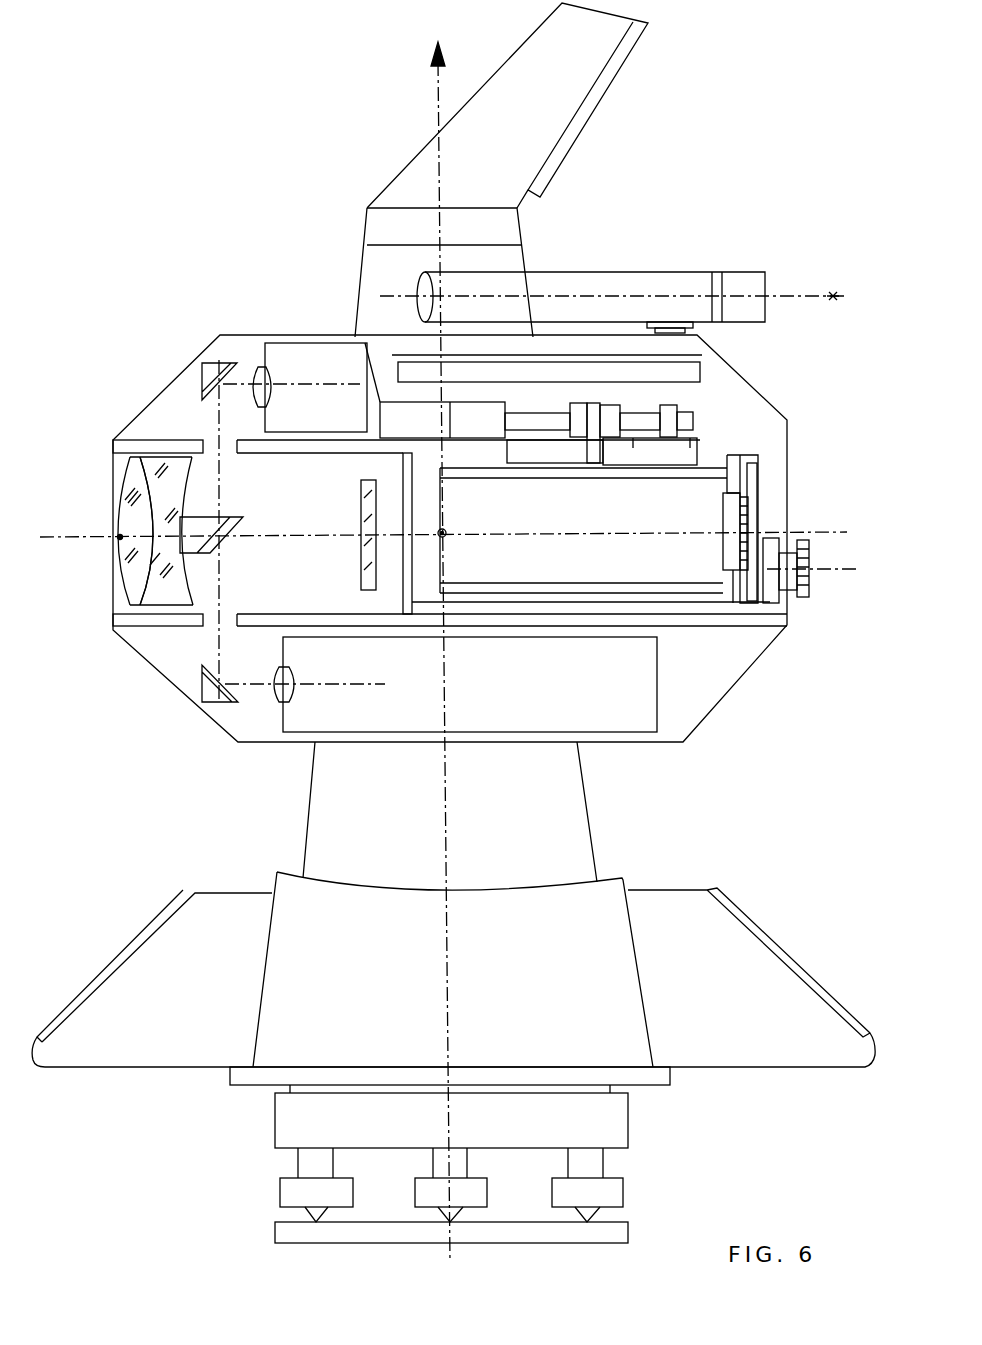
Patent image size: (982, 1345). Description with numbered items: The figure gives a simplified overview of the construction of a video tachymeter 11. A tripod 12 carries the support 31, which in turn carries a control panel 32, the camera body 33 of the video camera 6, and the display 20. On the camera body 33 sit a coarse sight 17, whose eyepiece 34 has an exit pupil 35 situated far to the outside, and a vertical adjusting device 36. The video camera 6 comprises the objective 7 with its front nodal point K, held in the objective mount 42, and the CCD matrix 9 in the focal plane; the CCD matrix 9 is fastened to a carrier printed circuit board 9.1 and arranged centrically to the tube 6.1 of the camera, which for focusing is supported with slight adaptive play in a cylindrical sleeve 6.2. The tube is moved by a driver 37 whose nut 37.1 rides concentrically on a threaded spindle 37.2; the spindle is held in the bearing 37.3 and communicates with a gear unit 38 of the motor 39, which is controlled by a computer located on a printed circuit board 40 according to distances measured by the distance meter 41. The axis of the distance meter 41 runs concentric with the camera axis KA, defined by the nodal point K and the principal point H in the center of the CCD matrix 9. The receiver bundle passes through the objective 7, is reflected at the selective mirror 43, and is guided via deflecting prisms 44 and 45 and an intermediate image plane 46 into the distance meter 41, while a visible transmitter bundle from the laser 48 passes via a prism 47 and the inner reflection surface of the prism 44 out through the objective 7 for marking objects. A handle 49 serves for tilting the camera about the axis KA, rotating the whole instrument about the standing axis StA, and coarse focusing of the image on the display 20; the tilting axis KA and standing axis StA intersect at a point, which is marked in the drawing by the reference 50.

The video camera 6 is at (305, 503).
The tube 6.1 is at (690, 480).
The cylindrical sleeve 6.2 is at (543, 463).
The objective 7 is at (203, 520).
The CCD matrix 9 is at (738, 572).
The carrier printed circuit board 9.1 is at (756, 475).
The video tachymeter 11 is at (677, 123).
The tripod 12 is at (282, 1127).
The coarse sight 17 is at (422, 290).
The display 20 is at (640, 52).
The support 31 is at (310, 820).
The control panel 32 is at (146, 930).
The camera body 33 is at (162, 676).
The eyepiece 34 is at (731, 276).
The exit pupil 35 is at (834, 290).
The vertical adjusting device 36 is at (646, 324).
The driver 37 is at (596, 465).
The nut 37.1 is at (630, 407).
The threaded spindle 37.2 is at (517, 428).
The bearing 37.3 is at (670, 428).
The gear unit 38 is at (493, 433).
The motor 39 is at (390, 408).
The printed circuit board 40 is at (708, 358).
The distance meter 41 is at (640, 740).
The objective mount 42 is at (113, 597).
The selective mirror 43 is at (360, 553).
The deflecting prism 44 is at (137, 497).
The deflecting prism 45 is at (218, 697).
The intermediate image plane 46 is at (225, 601).
The prism 47 is at (206, 380).
The laser 48 is at (292, 350).
The handle 49 is at (810, 557).
The pivot point 50 is at (441, 537).
The front nodal point K is at (118, 536).
The camera axis KA is at (247, 535).
The principal point H is at (748, 530).
The standing axis StA is at (437, 85).